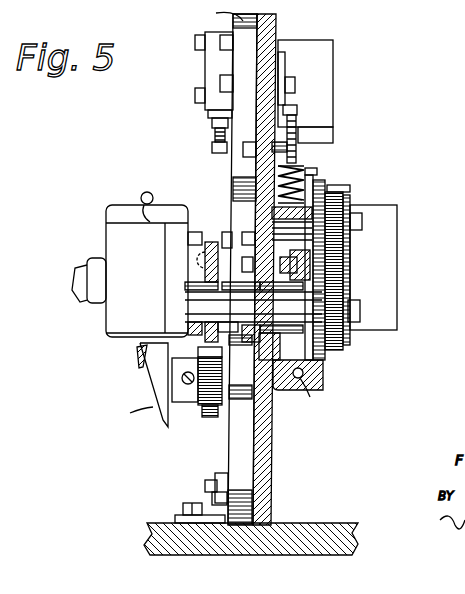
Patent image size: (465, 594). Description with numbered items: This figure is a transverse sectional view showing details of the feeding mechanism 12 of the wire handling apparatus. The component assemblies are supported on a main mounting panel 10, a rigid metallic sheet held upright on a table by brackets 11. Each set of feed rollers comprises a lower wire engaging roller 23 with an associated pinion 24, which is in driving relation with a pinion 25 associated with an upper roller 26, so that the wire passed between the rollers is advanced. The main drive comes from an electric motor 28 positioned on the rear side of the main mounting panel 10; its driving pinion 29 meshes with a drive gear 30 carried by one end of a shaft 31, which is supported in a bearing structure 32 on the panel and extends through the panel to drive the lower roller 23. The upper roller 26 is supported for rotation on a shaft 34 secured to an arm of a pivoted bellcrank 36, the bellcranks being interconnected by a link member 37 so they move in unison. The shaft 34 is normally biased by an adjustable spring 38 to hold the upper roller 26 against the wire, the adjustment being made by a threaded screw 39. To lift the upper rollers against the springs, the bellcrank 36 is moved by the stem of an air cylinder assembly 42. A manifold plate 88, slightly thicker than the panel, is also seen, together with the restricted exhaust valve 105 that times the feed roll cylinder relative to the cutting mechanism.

The main mounting panel 10 is at (278, 22).
The brackets 11 is at (222, 515).
The feeding mechanism 12 is at (368, 272).
The lower wire engaging roller 23 is at (352, 345).
The pinion 24 is at (323, 365).
The pinion 25 is at (318, 178).
The upper roller 26 is at (344, 192).
The electric motor 28 is at (150, 394).
The driving pinion 29 is at (212, 417).
The drive gear 30 is at (218, 242).
The shaft 31 is at (250, 338).
The bearing structure 32 is at (299, 371).
The shaft 34 is at (365, 205).
The bellcrank 36 is at (362, 243).
The link member 37 is at (292, 168).
The adjustable spring 38 is at (257, 172).
The threaded screw 39 is at (298, 110).
The air cylinder assembly 42 is at (334, 67).
The manifold plate 88 is at (217, 14).
The restricted exhaust valve 105 is at (205, 86).